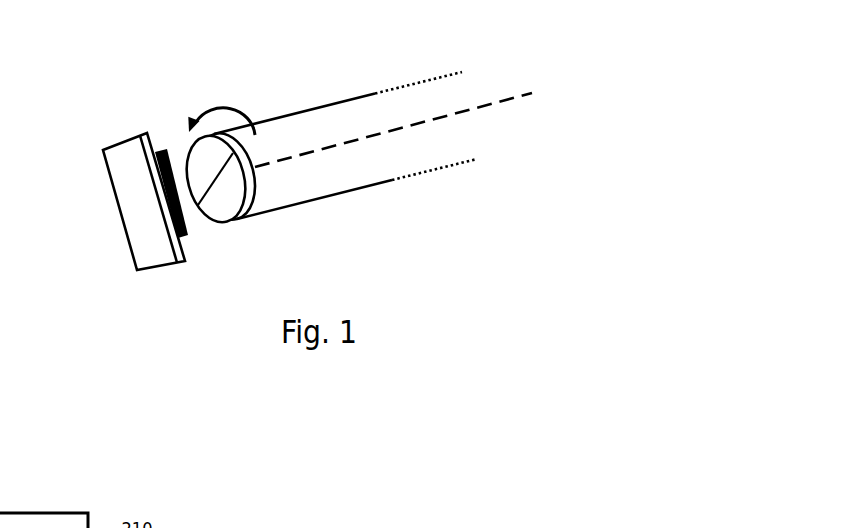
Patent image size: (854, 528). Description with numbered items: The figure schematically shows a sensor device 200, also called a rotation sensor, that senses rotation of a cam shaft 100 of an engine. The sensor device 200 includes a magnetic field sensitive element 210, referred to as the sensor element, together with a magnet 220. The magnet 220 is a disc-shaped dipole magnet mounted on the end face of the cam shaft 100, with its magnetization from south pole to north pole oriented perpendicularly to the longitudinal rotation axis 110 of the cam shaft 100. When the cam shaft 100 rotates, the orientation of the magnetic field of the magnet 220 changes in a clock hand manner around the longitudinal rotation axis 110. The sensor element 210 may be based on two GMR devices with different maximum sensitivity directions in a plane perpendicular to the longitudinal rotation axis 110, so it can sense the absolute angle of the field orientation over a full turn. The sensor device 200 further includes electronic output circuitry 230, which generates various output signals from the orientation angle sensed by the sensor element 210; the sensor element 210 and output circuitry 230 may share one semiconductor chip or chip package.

The cam shaft 100 is at (323, 105).
The longitudinal rotation axis 110 is at (513, 100).
The sensor device 200 is at (160, 102).
The magnetic field sensitive element 210 is at (183, 238).
The magnet 220 is at (227, 222).
The electronic output circuitry 230 is at (115, 198).